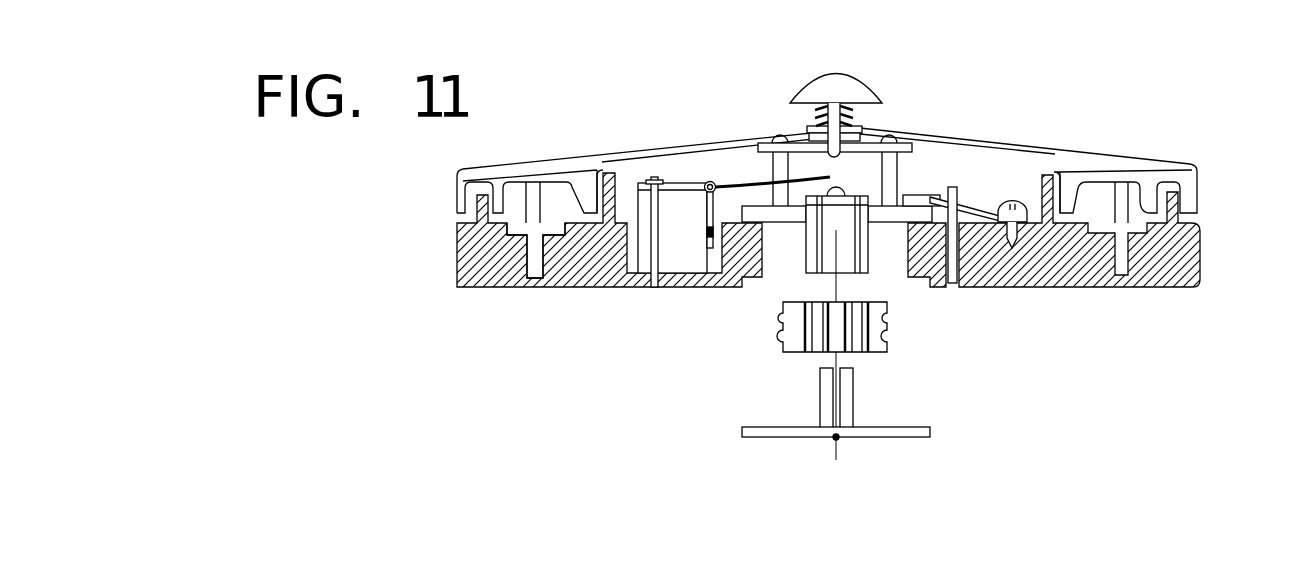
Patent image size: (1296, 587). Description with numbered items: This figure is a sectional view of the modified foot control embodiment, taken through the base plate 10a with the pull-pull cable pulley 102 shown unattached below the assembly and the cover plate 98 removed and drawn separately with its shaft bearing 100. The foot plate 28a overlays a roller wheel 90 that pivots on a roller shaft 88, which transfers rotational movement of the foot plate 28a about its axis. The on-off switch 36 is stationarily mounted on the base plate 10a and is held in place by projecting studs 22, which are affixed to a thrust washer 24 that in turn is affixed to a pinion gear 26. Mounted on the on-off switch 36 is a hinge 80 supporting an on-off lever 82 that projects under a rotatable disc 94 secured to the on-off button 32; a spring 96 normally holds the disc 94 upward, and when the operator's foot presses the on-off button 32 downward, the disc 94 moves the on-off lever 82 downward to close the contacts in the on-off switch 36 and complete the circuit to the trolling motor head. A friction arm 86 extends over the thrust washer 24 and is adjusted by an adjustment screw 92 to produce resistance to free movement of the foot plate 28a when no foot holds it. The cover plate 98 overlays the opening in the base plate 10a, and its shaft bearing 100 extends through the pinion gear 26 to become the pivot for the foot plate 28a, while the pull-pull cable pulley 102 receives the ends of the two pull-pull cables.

The base plate 10a is at (1180, 262).
The foot plate 28a is at (1147, 176).
The projecting studs 22 is at (888, 158).
The rotatable disc 94 is at (905, 150).
The on-off button 32 is at (841, 93).
The spring 96 is at (817, 122).
The thrust washer 24 is at (903, 213).
The pinion gear 26 is at (858, 262).
The friction arm 86 is at (955, 205).
The adjustment screw 92 is at (958, 280).
The hinge 80 is at (672, 182).
The on-off lever 82 is at (733, 185).
The on-off switch 36 is at (683, 260).
The roller wheel 90 is at (528, 205).
The roller shaft 88 is at (546, 232).
The pull-pull cable pulley 102 is at (783, 330).
The shaft bearing 100 is at (826, 405).
The cover plate 98 is at (925, 432).